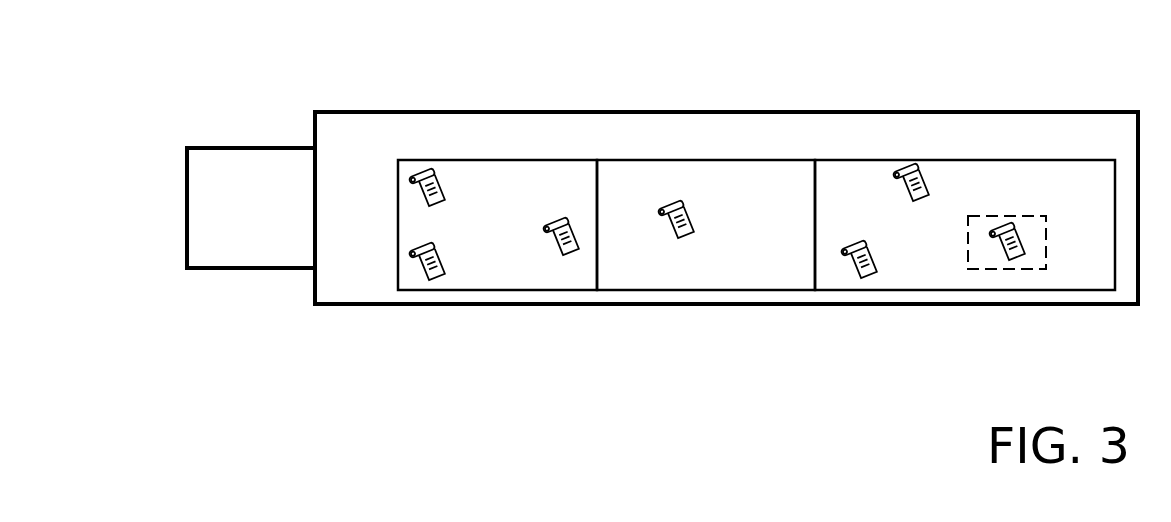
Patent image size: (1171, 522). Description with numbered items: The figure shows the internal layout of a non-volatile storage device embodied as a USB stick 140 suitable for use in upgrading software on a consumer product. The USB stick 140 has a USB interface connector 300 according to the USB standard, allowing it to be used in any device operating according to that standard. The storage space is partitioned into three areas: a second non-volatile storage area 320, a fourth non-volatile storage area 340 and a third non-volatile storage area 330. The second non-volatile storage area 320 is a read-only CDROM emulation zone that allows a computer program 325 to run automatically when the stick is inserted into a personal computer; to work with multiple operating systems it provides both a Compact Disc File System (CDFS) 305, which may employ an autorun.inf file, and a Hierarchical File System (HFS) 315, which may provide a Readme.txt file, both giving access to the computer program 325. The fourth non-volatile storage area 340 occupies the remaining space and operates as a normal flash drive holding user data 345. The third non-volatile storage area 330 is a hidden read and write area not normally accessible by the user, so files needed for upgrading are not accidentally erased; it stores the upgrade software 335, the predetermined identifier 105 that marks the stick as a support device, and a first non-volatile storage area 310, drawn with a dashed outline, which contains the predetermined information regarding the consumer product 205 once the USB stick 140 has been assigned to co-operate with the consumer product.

The USB stick 140 is at (431, 111).
The USB interface connector 300 is at (251, 148).
The second non-volatile storage area 320 is at (552, 291).
The fourth non-volatile storage area 340 is at (704, 291).
The third non-volatile storage area 330 is at (940, 291).
The Compact Disc File System (CDFS) 305 is at (446, 193).
The Hierarchical File System (HFS) 315 is at (447, 253).
The computer program 325 is at (556, 254).
The user data 345 is at (695, 218).
The upgrade software 335 is at (930, 186).
The predetermined identifier 105 is at (878, 258).
The first non-volatile storage area 310 is at (1036, 216).
The predetermined information regarding the consumer product 205 is at (1027, 247).